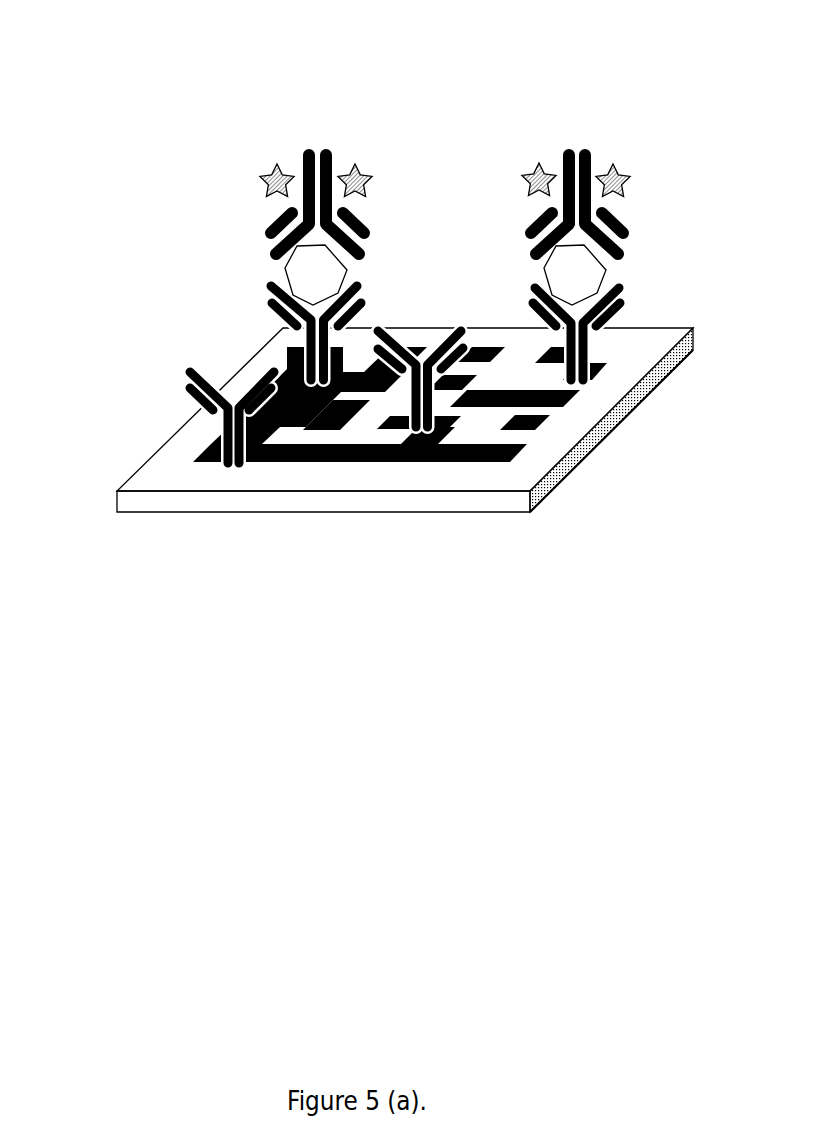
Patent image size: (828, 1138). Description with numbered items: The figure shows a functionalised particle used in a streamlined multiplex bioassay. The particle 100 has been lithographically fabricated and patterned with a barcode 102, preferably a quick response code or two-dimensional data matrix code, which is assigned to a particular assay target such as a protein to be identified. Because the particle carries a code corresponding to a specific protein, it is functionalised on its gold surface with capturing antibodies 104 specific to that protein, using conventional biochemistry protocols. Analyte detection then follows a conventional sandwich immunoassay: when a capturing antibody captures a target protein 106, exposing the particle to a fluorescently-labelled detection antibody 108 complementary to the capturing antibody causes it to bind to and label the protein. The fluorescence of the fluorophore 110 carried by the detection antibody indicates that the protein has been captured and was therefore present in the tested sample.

The particle 100 is at (487, 470).
The barcode 102 is at (333, 462).
The capturing antibodies 104 is at (187, 370).
The target protein 106 is at (305, 283).
The detection antibody 108 is at (318, 150).
The fluorophore 110 is at (368, 177).